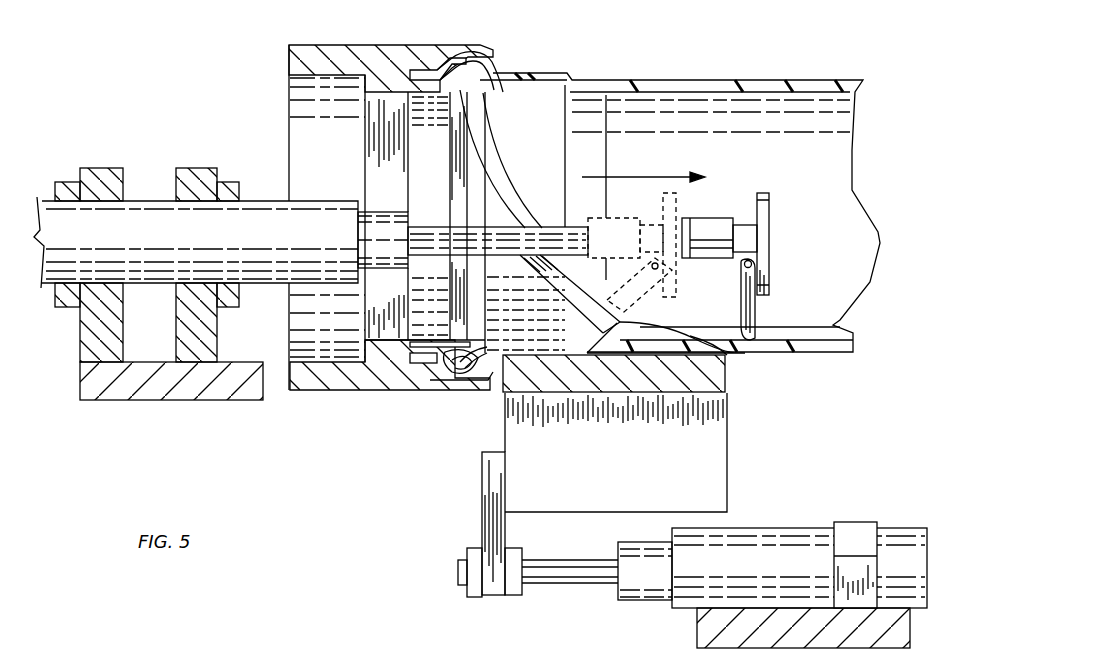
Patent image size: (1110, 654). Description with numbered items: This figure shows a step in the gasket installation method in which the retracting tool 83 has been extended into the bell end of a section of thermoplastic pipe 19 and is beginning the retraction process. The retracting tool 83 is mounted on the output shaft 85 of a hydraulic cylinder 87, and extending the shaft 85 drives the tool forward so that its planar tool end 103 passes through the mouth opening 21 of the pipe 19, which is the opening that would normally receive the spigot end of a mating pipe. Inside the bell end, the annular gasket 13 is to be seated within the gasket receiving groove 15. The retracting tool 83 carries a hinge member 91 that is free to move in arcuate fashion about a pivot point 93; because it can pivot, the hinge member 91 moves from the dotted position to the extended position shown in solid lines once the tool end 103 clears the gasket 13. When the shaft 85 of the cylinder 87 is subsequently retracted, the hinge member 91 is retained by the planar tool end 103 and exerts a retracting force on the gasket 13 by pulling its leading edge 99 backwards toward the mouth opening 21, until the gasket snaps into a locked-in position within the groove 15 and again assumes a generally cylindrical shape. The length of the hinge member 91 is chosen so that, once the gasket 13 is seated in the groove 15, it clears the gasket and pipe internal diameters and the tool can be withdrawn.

The hydraulic cylinder 87 is at (168, 213).
The mouth opening 21 is at (408, 172).
The gasket 13 is at (513, 183).
The output shaft 85 is at (552, 237).
The thermoplastic pipe 19 is at (655, 80).
The retracting tool 83 is at (700, 232).
The tool end 103 is at (770, 203).
The pivot point 93 is at (748, 264).
The leading edge 99 is at (725, 355).
The hinge member 91 is at (757, 313).
The gasket receiving groove 15 is at (455, 362).